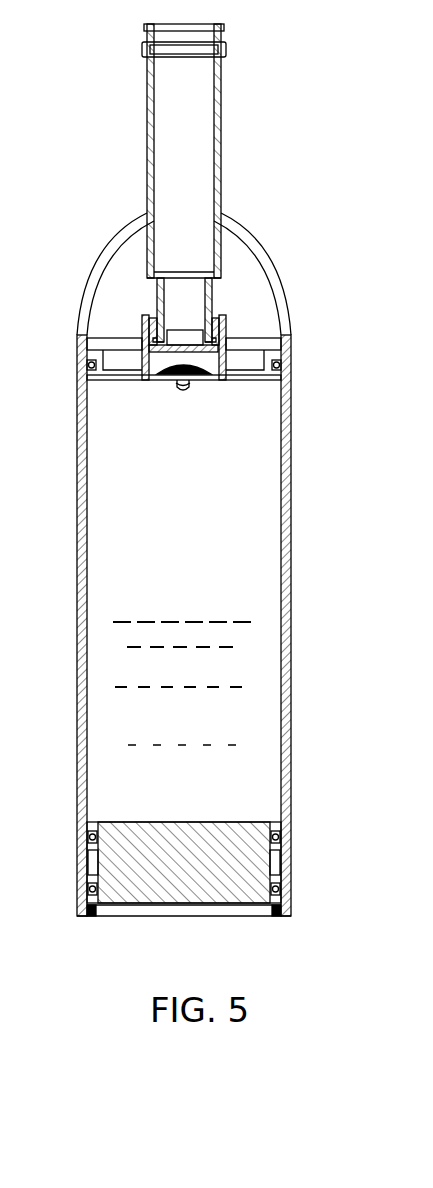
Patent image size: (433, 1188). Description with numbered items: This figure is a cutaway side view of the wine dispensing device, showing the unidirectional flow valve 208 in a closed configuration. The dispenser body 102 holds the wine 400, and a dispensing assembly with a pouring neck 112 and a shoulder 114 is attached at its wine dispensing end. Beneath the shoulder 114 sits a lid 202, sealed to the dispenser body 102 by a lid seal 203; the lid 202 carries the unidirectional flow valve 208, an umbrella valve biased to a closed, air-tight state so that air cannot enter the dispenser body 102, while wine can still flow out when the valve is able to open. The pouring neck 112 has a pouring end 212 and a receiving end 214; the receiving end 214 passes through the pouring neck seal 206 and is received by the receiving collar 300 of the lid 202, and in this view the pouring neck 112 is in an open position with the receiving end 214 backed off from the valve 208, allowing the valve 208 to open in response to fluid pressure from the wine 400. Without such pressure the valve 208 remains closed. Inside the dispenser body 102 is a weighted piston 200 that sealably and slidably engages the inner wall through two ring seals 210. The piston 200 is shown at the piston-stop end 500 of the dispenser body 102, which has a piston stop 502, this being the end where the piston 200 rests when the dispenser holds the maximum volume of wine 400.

The dispenser body 102 is at (292, 609).
The pouring neck 112 is at (222, 151).
The shoulder 114 is at (272, 264).
The weighted piston 200 is at (167, 813).
The lid 202 is at (257, 389).
The lid seal 203 is at (291, 356).
The pouring neck seal 206 is at (184, 331).
The unidirectional flow valve 208 is at (172, 386).
The ring seals 210 is at (88, 839).
The pouring end 212 is at (221, 35).
The receiving end 214 is at (157, 299).
The receiving collar 300 is at (142, 328).
The wine 400 is at (182, 683).
The piston-stop end 500 is at (311, 918).
The piston stop 502 is at (292, 414).